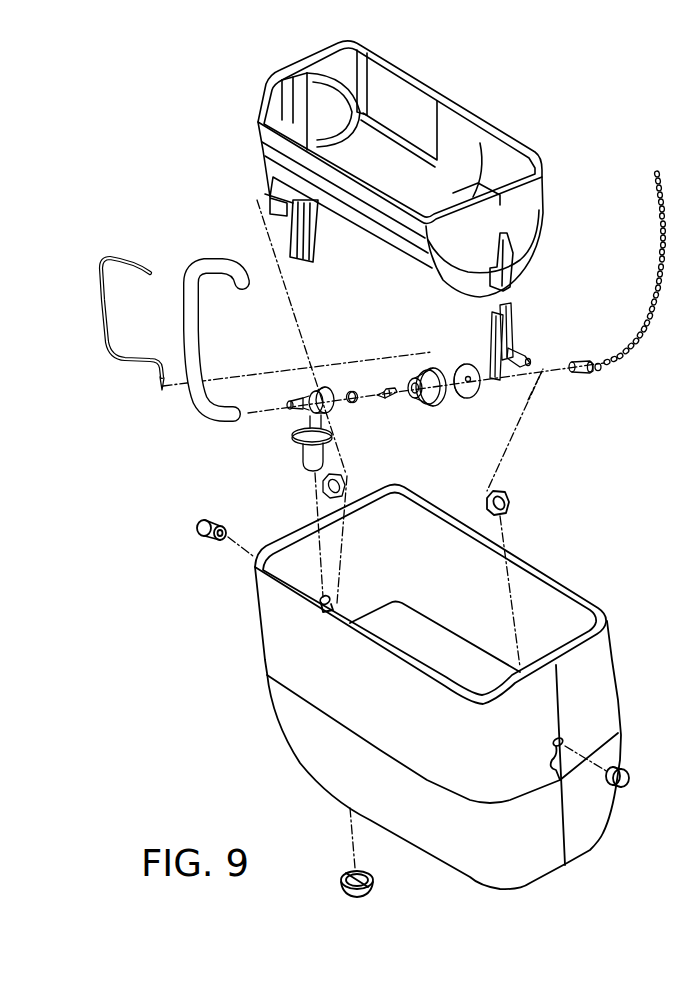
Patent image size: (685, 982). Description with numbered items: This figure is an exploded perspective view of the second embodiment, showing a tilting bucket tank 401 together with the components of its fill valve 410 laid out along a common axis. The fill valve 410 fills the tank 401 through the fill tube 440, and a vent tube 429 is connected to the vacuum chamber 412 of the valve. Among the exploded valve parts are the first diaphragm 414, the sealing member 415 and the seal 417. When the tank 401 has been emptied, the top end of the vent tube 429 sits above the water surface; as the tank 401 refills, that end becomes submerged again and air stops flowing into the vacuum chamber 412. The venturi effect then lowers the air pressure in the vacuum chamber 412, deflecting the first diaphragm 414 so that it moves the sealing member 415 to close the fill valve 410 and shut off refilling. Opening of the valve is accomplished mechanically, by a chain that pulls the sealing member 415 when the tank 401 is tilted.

The tilting bucket tank 401 is at (414, 99).
The fill tube 440 is at (208, 259).
The vent tube 429 is at (100, 294).
The fill valve 410 is at (398, 346).
The seal 417 is at (357, 390).
The sealing member 415 is at (384, 400).
The vacuum chamber 412 is at (430, 370).
The first diaphragm 414 is at (467, 400).